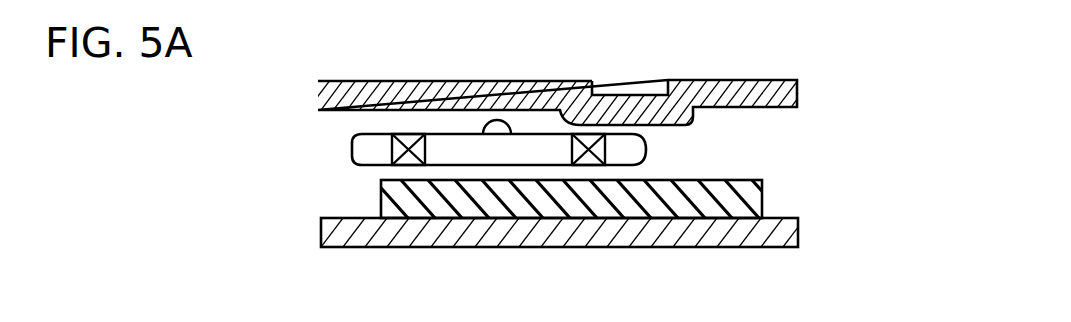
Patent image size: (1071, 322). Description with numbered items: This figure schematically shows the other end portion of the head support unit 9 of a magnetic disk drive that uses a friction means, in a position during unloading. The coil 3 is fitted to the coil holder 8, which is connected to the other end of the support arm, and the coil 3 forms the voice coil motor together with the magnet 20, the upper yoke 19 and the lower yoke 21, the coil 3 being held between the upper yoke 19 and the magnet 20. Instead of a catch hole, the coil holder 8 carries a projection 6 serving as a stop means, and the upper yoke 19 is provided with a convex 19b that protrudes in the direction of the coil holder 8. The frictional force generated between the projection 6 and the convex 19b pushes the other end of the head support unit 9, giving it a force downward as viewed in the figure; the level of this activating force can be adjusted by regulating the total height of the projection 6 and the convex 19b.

The coil 3 is at (404, 134).
The projection 6 is at (494, 124).
The coil holder 8 is at (353, 156).
The head support unit 9 is at (424, 113).
The upper yoke 19 is at (797, 80).
The convex 19b is at (677, 108).
The magnet 20 is at (579, 204).
The lower yoke 21 is at (667, 247).